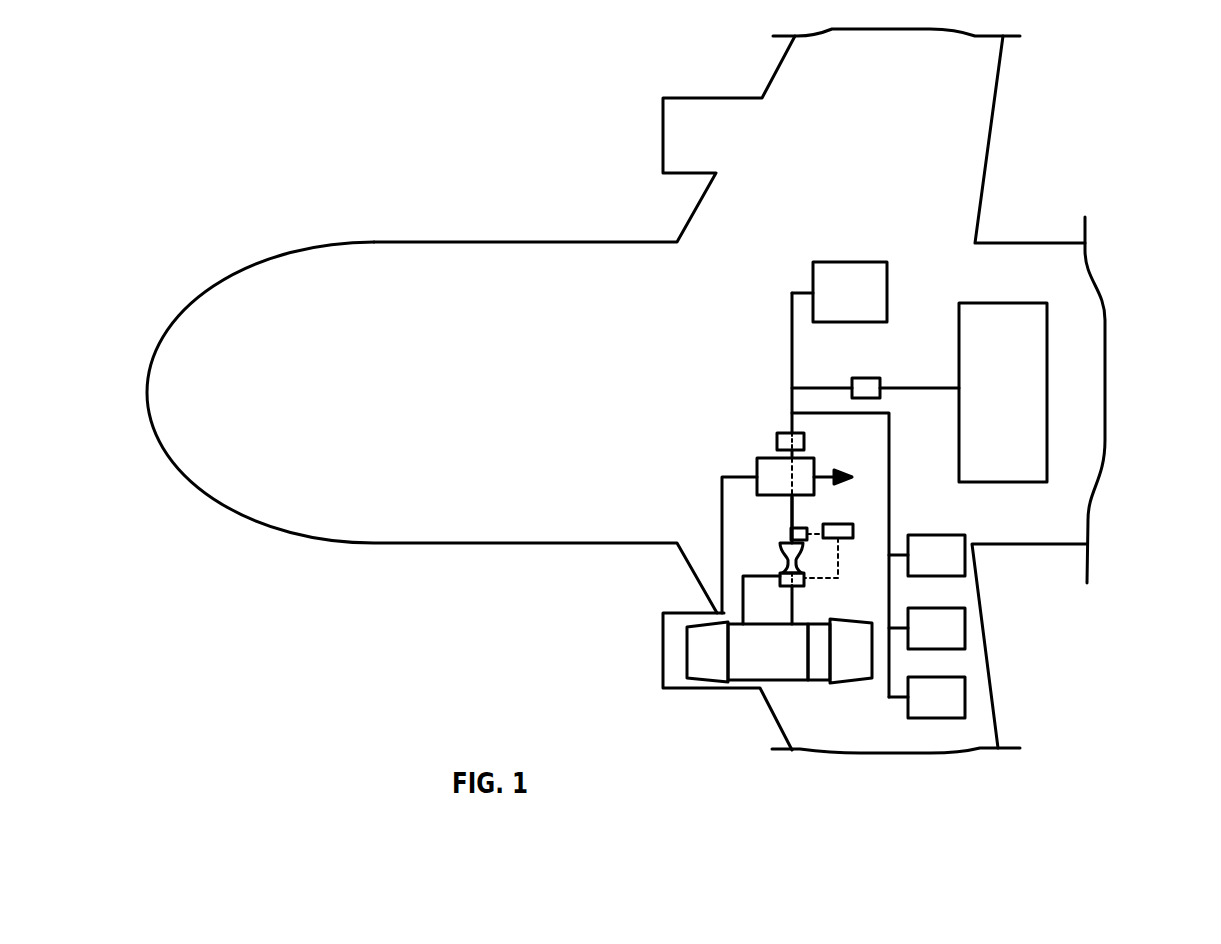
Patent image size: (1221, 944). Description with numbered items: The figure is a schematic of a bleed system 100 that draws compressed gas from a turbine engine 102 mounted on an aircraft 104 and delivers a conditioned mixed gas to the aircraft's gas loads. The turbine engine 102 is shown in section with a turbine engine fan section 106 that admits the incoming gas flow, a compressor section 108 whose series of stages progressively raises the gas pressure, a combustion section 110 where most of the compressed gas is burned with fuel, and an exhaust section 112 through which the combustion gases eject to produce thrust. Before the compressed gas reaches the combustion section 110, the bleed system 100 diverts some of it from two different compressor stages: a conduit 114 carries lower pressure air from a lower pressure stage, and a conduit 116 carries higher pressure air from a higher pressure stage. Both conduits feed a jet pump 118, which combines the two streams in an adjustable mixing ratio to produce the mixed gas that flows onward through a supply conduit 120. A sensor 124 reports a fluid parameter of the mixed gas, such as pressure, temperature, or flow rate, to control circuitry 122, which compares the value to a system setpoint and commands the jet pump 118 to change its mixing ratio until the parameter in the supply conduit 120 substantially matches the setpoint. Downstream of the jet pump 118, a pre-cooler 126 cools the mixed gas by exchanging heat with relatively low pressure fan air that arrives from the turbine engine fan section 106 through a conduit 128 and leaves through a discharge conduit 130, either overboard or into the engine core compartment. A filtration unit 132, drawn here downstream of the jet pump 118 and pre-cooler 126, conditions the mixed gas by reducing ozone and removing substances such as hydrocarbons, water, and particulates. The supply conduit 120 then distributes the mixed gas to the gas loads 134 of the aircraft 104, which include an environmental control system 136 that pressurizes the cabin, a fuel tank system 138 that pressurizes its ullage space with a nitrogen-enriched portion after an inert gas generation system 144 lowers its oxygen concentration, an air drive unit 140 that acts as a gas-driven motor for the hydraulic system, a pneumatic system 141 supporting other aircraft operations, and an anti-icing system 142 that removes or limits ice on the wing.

The bleed system 100 is at (621, 462).
The turbine engine 102 is at (756, 706).
The aircraft 104 is at (236, 182).
The turbine engine fan section 106 is at (712, 665).
The compressor section 108 is at (767, 658).
The combustion section 110 is at (818, 668).
The exhaust section 112 is at (860, 665).
The conduit 114 is at (752, 574).
The conduit 116 is at (792, 588).
The jet pump 118 is at (798, 587).
The supply conduit 120 is at (790, 507).
The control circuitry 122 is at (840, 537).
The sensor 124 is at (802, 530).
The pre-cooler 126 is at (757, 468).
The conduit 128 is at (719, 525).
The discharge conduit 130 is at (822, 472).
The filtration unit 132 is at (777, 445).
The gas loads 134 is at (1135, 526).
The environmental control system 136 is at (832, 303).
The fuel tank system 138 is at (985, 399).
The air drive unit 140 is at (918, 567).
The pneumatic system 141 is at (918, 640).
The anti-icing system 142 is at (918, 709).
The inert gas generation system 144 is at (858, 378).